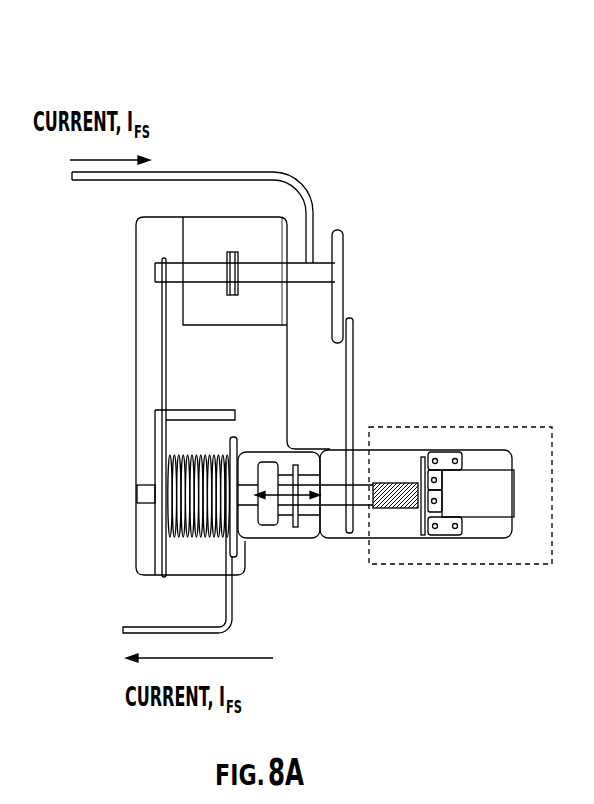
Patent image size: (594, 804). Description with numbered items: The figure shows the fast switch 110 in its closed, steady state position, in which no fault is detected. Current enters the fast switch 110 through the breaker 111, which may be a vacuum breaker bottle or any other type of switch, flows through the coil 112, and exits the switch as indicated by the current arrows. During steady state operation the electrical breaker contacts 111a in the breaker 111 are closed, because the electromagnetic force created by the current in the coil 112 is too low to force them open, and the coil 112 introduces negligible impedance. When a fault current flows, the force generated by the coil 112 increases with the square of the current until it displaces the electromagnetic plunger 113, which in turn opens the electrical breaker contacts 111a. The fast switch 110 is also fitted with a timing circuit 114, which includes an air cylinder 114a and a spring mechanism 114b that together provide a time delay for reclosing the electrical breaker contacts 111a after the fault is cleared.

The fast switch 110 is at (197, 52).
The breaker 111 is at (272, 228).
The electrical breaker contacts 111a is at (249, 259).
The coil 112 is at (168, 512).
The electromagnetic plunger 113 is at (272, 517).
The timing circuit 114 is at (455, 429).
The air cylinder 114a is at (520, 470).
The spring mechanism 114b is at (415, 510).